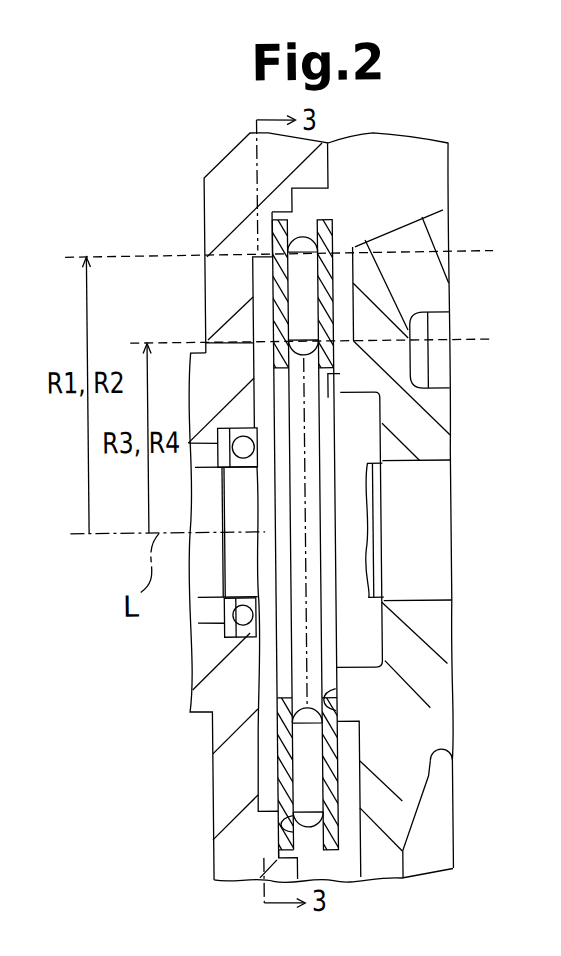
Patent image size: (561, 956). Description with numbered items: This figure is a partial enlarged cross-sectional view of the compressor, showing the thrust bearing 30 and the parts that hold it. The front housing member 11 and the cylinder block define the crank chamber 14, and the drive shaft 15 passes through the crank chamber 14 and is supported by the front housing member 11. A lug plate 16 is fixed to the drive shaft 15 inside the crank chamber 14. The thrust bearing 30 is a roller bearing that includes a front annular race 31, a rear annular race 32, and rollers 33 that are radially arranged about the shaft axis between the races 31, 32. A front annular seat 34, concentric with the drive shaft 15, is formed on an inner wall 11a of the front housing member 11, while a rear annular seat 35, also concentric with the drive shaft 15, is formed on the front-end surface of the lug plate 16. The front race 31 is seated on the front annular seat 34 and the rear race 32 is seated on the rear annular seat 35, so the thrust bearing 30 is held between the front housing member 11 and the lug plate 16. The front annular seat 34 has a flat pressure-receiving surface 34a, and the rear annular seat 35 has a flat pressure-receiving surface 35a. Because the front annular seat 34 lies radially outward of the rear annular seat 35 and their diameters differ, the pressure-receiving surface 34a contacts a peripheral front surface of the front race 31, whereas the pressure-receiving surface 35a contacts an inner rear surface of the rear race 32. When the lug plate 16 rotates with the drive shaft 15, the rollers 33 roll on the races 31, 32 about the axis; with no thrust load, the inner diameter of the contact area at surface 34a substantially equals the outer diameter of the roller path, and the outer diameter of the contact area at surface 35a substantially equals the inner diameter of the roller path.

The front housing member 11 is at (244, 159).
The inner wall 11a is at (308, 186).
The crank chamber 14 is at (441, 182).
The drive shaft 15 is at (440, 547).
The lug plate 16 is at (426, 710).
The thrust bearing 30 is at (273, 237).
The front annular race 31 is at (275, 739).
The rear annular race 32 is at (437, 755).
The rollers 33 is at (304, 292).
The front annular seat 34 is at (263, 246).
The pressure-receiving surface 34a is at (272, 815).
The rear annular seat 35 is at (344, 374).
The pressure-receiving surface 35a is at (342, 684).